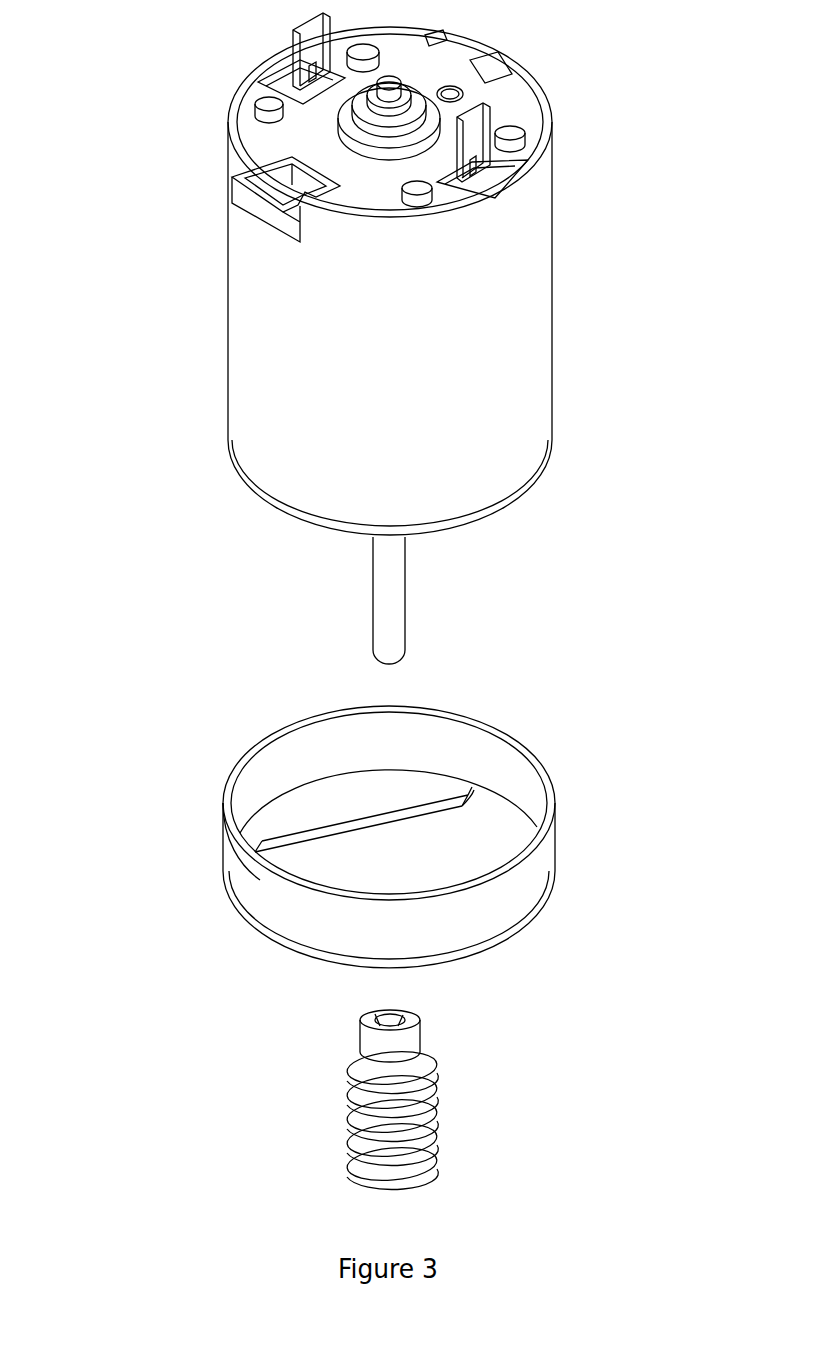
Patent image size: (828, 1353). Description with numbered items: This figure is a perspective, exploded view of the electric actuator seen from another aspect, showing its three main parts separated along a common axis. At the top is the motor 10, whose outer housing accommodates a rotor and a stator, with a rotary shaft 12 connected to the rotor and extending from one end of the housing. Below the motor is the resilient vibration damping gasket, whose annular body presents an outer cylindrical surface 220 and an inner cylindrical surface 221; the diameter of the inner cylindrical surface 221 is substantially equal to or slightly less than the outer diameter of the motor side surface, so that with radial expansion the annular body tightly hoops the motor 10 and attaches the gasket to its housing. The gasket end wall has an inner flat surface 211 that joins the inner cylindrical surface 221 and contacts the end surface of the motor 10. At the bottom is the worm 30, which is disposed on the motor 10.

The motor 10 is at (180, 273).
The rotary shaft 12 is at (388, 628).
The outer cylindrical surface 220 is at (530, 880).
The inner cylindrical surface 221 is at (445, 740).
The inner flat surface 211 is at (337, 818).
The worm 30 is at (440, 1107).